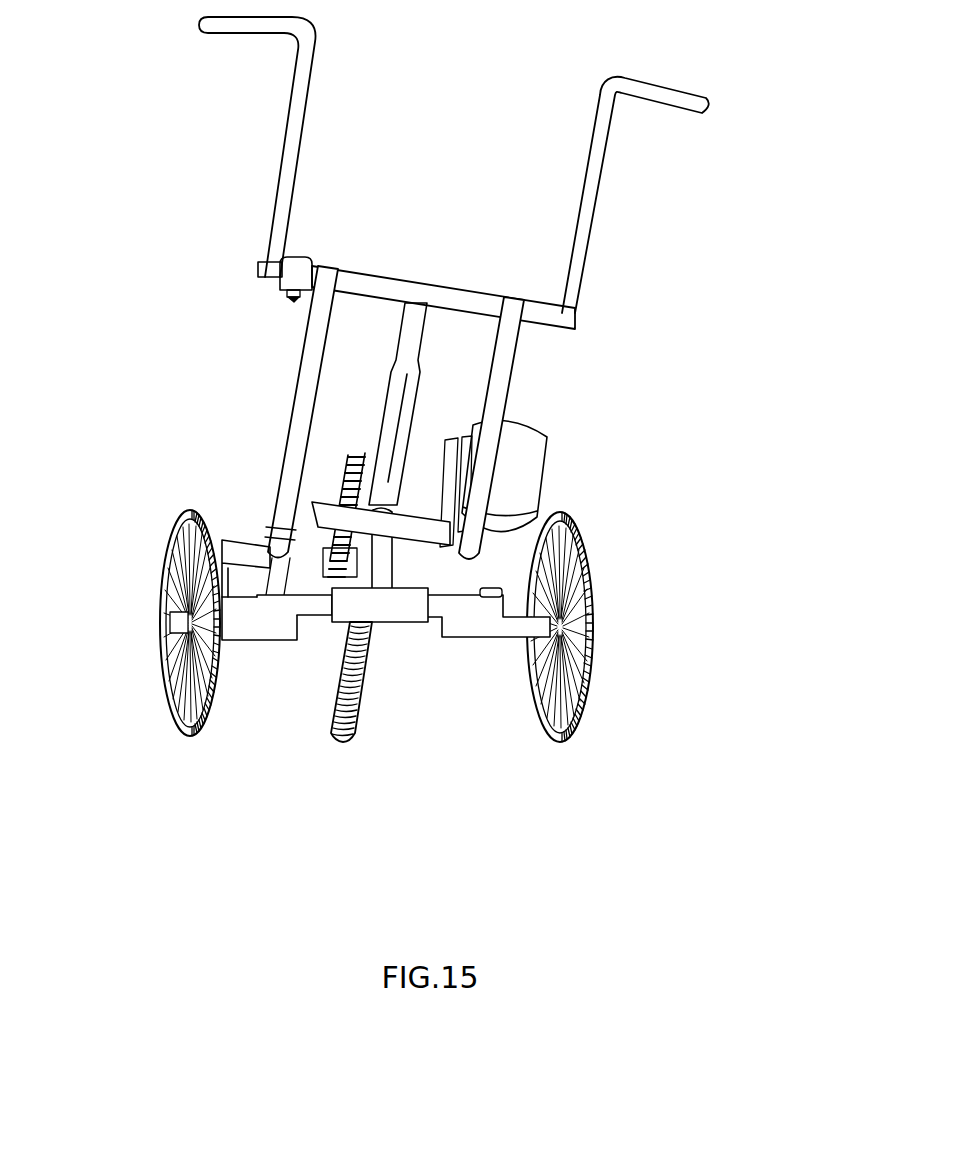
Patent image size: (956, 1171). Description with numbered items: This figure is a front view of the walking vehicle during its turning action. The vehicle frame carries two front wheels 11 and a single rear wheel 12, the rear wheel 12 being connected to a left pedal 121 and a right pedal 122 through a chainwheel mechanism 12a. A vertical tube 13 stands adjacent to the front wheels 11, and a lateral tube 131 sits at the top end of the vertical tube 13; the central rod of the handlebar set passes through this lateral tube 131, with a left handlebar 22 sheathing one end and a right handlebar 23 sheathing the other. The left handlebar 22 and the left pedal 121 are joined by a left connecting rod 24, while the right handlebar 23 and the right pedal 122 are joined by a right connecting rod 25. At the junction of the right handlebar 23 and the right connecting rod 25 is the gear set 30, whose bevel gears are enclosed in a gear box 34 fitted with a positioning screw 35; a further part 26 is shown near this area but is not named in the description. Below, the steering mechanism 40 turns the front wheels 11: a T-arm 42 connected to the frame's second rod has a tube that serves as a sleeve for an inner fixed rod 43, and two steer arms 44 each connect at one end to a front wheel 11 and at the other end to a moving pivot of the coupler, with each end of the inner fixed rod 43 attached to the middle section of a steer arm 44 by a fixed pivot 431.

The front wheels 11 is at (185, 597).
The rear wheel 12 is at (358, 693).
The chainwheel mechanism 12a is at (350, 457).
The vertical tube 13 is at (419, 337).
The left pedal 121 is at (533, 450).
The right pedal 122 is at (246, 552).
The lateral tube 131 is at (365, 283).
The left handlebar 22 is at (680, 100).
The right handlebar 23 is at (247, 20).
The left connecting rod 24 is at (515, 350).
The right connecting rod 25 is at (302, 353).
The clamp 26 is at (260, 267).
The gear set 30 is at (303, 250).
The gear box 34 is at (296, 262).
The positioning screw 35 is at (290, 298).
The steering mechanism 40 is at (332, 640).
The T-arm 42 is at (390, 612).
The inner fixed rod 43 is at (296, 605).
The fixed pivot 431 is at (497, 590).
The steer arms 44 is at (252, 635).